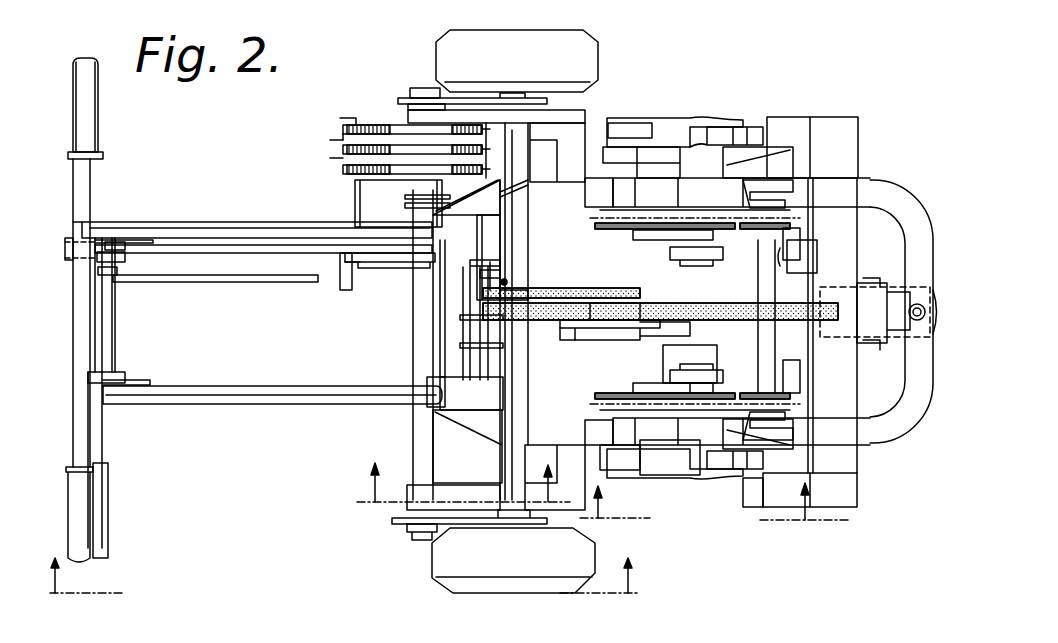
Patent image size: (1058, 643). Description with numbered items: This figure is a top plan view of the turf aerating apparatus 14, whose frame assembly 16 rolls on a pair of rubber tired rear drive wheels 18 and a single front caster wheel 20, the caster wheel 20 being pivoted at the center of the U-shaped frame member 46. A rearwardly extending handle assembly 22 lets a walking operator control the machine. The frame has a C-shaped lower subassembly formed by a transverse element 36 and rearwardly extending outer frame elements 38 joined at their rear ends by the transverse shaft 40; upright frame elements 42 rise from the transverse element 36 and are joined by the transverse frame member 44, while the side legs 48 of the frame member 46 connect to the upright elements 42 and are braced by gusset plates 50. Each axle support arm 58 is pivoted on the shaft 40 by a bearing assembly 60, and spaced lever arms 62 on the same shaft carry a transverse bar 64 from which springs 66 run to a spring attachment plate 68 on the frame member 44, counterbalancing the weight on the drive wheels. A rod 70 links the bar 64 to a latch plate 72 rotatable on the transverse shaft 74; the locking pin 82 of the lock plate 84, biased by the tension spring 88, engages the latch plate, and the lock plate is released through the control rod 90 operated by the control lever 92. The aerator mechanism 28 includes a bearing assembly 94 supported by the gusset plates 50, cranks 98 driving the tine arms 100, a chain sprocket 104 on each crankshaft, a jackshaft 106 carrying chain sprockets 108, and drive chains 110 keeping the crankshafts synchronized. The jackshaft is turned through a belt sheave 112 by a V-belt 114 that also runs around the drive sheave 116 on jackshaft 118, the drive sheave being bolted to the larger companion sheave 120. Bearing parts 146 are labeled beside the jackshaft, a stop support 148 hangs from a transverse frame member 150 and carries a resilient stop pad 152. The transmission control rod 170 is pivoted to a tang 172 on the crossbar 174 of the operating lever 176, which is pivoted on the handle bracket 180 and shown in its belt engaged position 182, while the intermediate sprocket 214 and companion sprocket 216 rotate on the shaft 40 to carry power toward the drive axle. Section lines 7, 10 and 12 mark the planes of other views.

The section line 7- 7 is at (464, 492).
The section line 10- 10 is at (715, 513).
The section line 12- 12 is at (358, 590).
The turf aerating apparatus 14 is at (652, 72).
The frame assembly 16 is at (582, 115).
The rear drive wheels 18 is at (441, 42).
The front caster wheel 20 is at (870, 348).
The handle assembly 22 is at (246, 402).
The aerator mechanism 28 is at (707, 192).
The transverse element 36 is at (600, 115).
The outer frame elements 38 is at (548, 132).
The transverse shaft 40 is at (415, 434).
The upright frame elements 42 is at (556, 210).
The transverse frame member 44 is at (501, 494).
The U-shaped frame member 46 is at (930, 162).
The side legs 48 is at (740, 118).
The gusset plates 50 is at (620, 434).
The axle support arm 58 is at (468, 98).
The bearing assembly 60 is at (410, 93).
The lever arms 62 is at (345, 152).
The transverse bar 64 is at (355, 197).
The springs 66 is at (345, 130).
The spring attachment plate 68 is at (498, 124).
The rod 70 is at (386, 280).
The latch plate 72 is at (432, 266).
The transverse shaft 74 is at (462, 361).
The locking pin 82 is at (492, 262).
The lock plate 84 is at (480, 198).
The tension spring 88 is at (505, 290).
The control rod 90 is at (196, 232).
The control lever 92 is at (82, 224).
The bearing assembly 94 is at (668, 478).
The cranks 98 is at (650, 382).
The tine arms 100 is at (712, 387).
The chain sprocket 104 is at (616, 234).
The jackshaft 106 is at (760, 284).
The chain sprockets 108 is at (792, 229).
The drive chains 110 is at (668, 266).
The belt sheave 112 is at (797, 310).
The V-belt 114 is at (800, 322).
The drive sheave 116 is at (592, 335).
The jackshaft 118 is at (580, 357).
The companion sheave 120 is at (632, 297).
The bearing 146 is at (797, 255).
The stop support 148 is at (800, 119).
The transverse frame member 150 is at (850, 472).
The resilient stop pad 152 is at (757, 502).
The control rod 170 is at (223, 284).
The tang 172 is at (120, 272).
The crossbar 174 is at (116, 330).
The operating lever 176 is at (185, 363).
The handle bracket 180 is at (150, 381).
The belt engaged position 182 is at (104, 449).
The intermediate sprocket 214 is at (406, 206).
The companion sprocket 216 is at (405, 196).